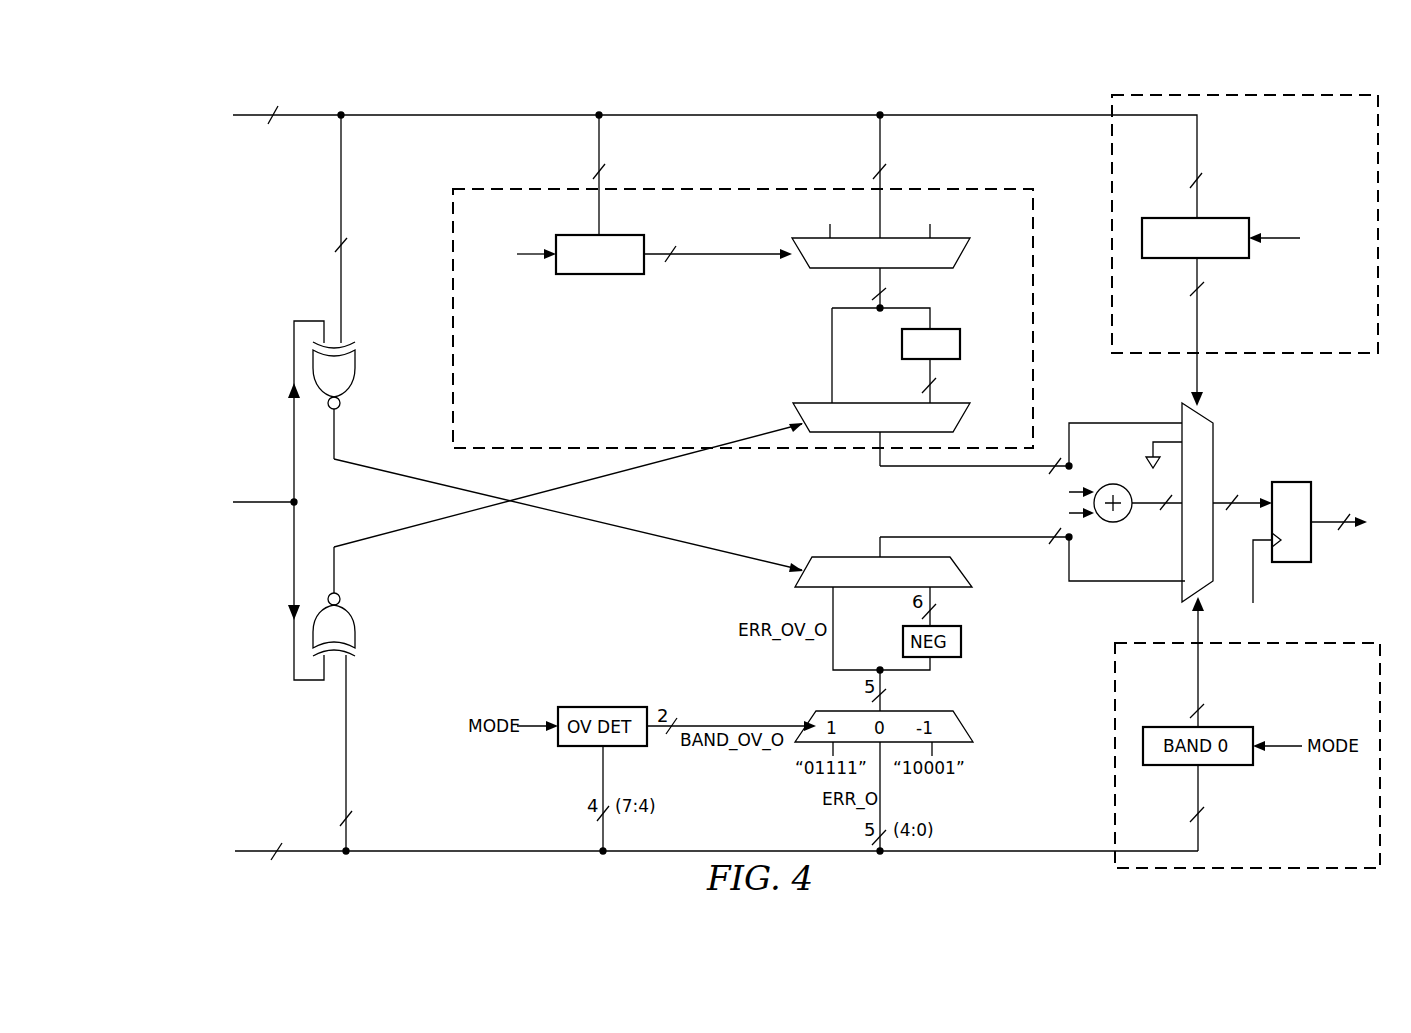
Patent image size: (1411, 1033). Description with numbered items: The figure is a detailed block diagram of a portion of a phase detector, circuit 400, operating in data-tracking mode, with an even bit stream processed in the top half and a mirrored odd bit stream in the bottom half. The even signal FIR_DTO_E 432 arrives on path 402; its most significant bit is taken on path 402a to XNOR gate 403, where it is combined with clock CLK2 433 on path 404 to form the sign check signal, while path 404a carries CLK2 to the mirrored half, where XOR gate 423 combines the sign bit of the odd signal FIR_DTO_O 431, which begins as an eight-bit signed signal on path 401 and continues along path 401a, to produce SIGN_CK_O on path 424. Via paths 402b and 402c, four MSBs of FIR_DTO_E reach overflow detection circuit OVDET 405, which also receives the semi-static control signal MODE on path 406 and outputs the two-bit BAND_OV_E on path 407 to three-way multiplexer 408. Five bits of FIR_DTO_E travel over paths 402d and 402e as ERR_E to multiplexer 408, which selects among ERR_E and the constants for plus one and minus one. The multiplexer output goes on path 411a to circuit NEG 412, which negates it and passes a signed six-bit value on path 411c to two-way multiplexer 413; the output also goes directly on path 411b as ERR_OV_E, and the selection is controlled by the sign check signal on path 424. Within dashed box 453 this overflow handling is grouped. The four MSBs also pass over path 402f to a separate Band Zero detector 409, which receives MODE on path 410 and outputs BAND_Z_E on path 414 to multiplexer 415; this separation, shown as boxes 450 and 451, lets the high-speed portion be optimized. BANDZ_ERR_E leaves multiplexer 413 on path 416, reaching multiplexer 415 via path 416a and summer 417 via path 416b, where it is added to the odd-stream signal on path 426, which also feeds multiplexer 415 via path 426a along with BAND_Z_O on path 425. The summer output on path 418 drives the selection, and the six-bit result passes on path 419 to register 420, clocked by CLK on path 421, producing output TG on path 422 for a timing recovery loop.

The circuit 400 is at (205, 691).
The path 401 is at (333, 858).
The SIGN_O sign bit line 401a is at (344, 760).
The path 402 is at (316, 113).
The path 402a is at (339, 190).
The path 402b is at (472, 113).
The path 402c is at (597, 145).
The path 402d is at (740, 113).
The path 402e is at (877, 145).
The path 402f is at (1199, 141).
The XNOR gate 403 is at (355, 366).
The path 404 is at (290, 410).
The path 404a is at (290, 592).
The overflow detection circuit OVDET 405 is at (597, 276).
The path 406 is at (528, 262).
The path 407 is at (734, 252).
The three-way multiplexer 408 is at (960, 262).
The Band Zero detector 409 is at (1152, 218).
The path 410 is at (1273, 244).
The path 411a is at (932, 312).
The path 411b is at (829, 329).
The path 411c is at (938, 395).
The circuit NEG 412 is at (960, 345).
The two-way multiplexer 413 is at (878, 400).
The path 414 is at (1194, 320).
The multiplexer 415 is at (1204, 412).
The path 416 is at (876, 462).
The path 416a is at (1130, 421).
The path 416b is at (896, 470).
The summer 417 is at (1108, 522).
The path 418 is at (1146, 508).
The path 419 is at (1248, 500).
The register 420 is at (1290, 481).
The path 421 is at (1254, 580).
The path 422 is at (1325, 530).
The XOR gate 423 is at (355, 640).
The path 424 is at (378, 535).
The path 425 is at (1195, 675).
The path 426 is at (879, 549).
The path 426a is at (1132, 583).
The FIR_DTO_O 431 is at (187, 854).
The FIR_DTO_E 432 is at (178, 118).
The CLK2 433 is at (241, 505).
The box 450 is at (1347, 141).
The box 451 is at (1350, 839).
The overflow error block 453 is at (515, 406).